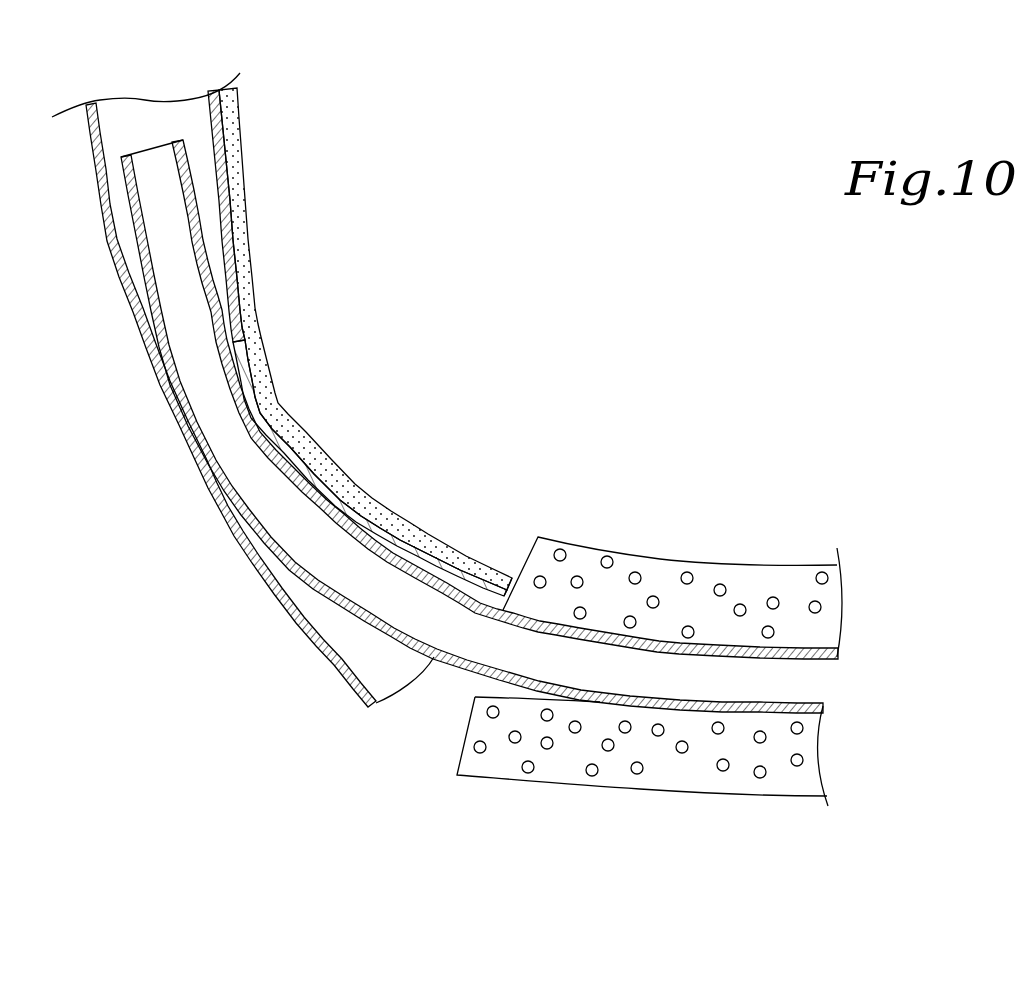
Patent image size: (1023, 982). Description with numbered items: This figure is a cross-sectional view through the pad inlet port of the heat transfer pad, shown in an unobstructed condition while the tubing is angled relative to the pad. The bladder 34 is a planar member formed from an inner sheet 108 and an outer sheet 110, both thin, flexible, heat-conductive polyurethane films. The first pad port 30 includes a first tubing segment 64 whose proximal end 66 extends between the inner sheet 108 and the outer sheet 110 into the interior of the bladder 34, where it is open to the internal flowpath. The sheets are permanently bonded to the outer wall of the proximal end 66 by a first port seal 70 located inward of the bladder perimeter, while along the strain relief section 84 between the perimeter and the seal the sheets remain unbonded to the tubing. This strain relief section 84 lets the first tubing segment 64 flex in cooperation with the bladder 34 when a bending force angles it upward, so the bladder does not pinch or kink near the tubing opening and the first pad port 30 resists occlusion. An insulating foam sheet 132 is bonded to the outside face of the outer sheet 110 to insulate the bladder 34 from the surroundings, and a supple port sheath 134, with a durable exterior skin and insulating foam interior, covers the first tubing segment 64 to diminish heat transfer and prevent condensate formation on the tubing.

The first pad port 30 is at (810, 685).
The bladder 34 is at (219, 410).
The first tubing segment 64 is at (808, 647).
The proximal end 66 is at (606, 637).
The first port seal 70 is at (460, 426).
The strain relief section 84 is at (370, 700).
The inner sheet 108 is at (260, 410).
The outer sheet 110 is at (233, 160).
The insulating foam sheet 132 is at (297, 422).
The port sheath 134 is at (727, 570).